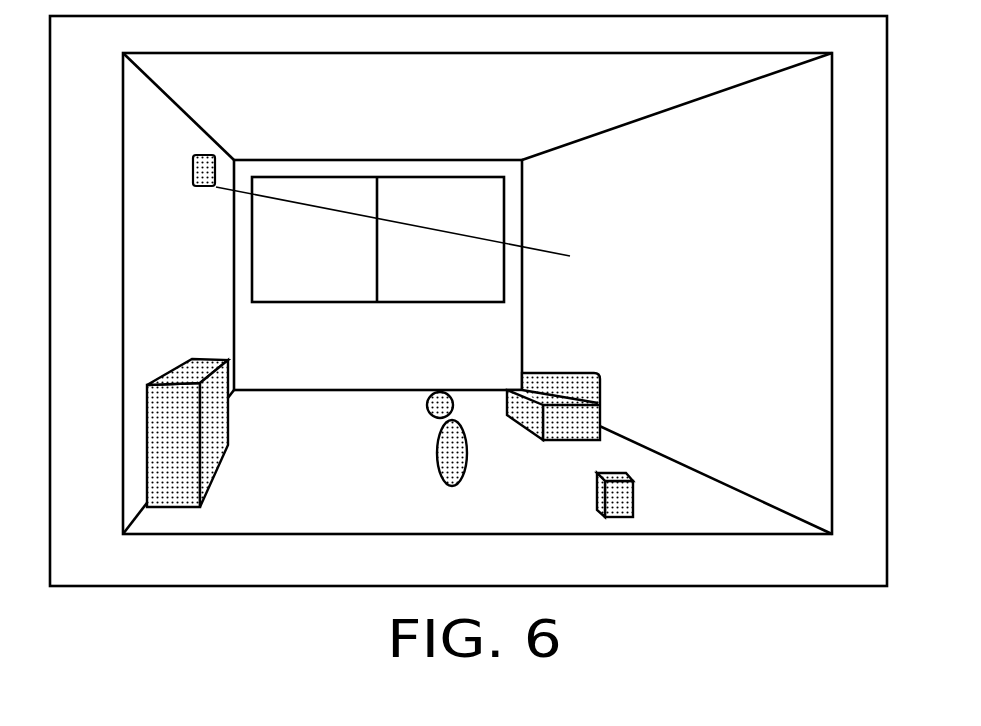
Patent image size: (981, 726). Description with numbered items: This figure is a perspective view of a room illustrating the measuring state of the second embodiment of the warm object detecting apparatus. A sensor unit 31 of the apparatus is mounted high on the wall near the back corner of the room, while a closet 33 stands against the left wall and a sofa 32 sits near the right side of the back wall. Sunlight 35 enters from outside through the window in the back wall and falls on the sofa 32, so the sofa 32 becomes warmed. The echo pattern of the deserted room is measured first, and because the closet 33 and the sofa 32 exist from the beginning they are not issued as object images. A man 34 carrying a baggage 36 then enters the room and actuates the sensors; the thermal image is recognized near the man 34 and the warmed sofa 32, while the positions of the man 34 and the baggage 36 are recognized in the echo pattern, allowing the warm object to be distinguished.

The sensor unit 31 is at (279, 450).
The sofa 32 is at (569, 390).
The closet 33 is at (187, 416).
The man 34 is at (438, 478).
The sunlight 35 is at (517, 375).
The baggage 36 is at (640, 501).